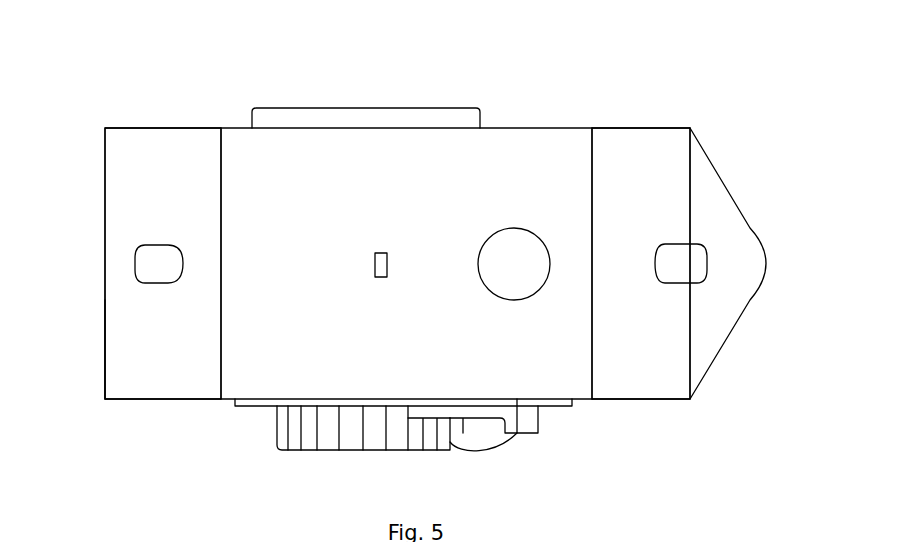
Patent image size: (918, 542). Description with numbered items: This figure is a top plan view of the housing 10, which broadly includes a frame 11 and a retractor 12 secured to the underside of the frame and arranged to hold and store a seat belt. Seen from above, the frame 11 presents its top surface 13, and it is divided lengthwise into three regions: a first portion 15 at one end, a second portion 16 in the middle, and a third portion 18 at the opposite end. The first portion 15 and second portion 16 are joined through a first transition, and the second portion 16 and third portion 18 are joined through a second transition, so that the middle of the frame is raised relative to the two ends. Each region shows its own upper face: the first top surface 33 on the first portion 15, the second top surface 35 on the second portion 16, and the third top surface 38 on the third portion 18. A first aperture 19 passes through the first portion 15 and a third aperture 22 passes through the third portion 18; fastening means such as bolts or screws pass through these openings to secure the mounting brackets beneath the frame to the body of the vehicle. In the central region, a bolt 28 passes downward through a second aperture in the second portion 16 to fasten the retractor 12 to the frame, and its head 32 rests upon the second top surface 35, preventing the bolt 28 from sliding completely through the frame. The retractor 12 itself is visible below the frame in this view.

The housing 10 is at (588, 72).
The frame 11 is at (242, 165).
The retractor 12 is at (318, 430).
The top surface 13 is at (358, 188).
The first portion 15 is at (130, 363).
The second portion 16 is at (538, 373).
The third portion 18 is at (705, 328).
The first aperture 19 is at (154, 262).
The third aperture 22 is at (680, 263).
The bolt 28 is at (491, 263).
The head 32 is at (529, 273).
The first top surface 33 is at (148, 163).
The second top surface 35 is at (276, 177).
The third top surface 38 is at (647, 173).